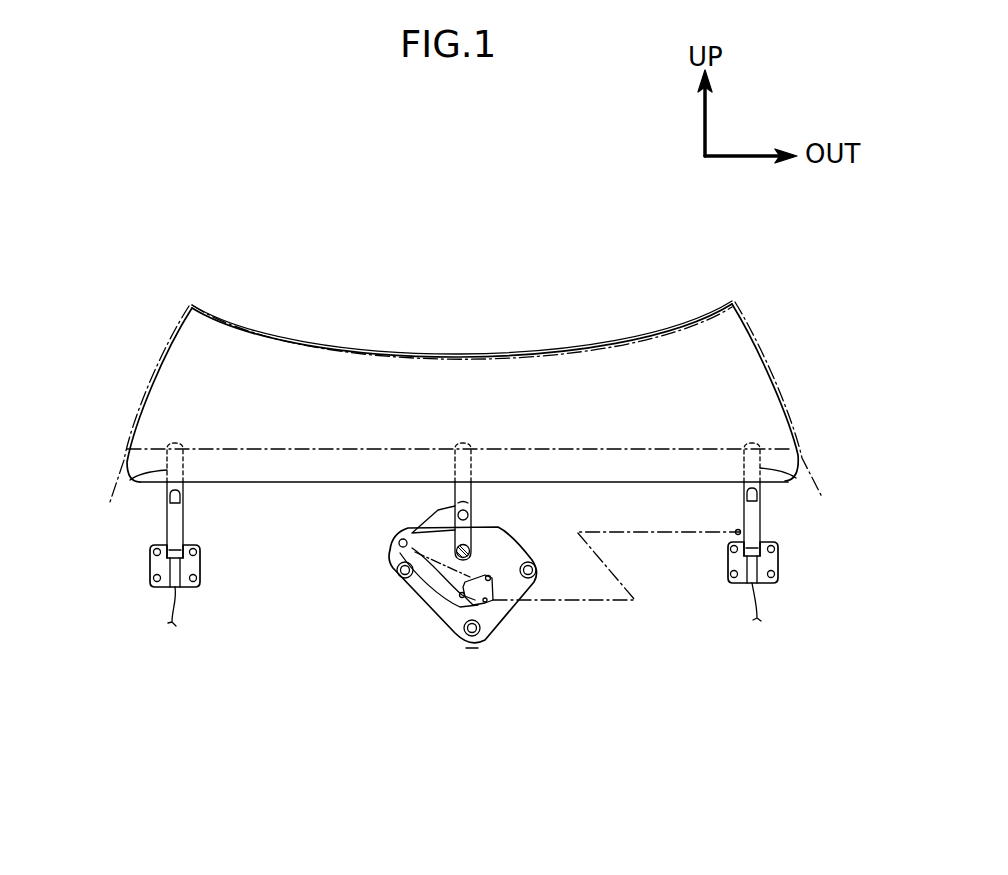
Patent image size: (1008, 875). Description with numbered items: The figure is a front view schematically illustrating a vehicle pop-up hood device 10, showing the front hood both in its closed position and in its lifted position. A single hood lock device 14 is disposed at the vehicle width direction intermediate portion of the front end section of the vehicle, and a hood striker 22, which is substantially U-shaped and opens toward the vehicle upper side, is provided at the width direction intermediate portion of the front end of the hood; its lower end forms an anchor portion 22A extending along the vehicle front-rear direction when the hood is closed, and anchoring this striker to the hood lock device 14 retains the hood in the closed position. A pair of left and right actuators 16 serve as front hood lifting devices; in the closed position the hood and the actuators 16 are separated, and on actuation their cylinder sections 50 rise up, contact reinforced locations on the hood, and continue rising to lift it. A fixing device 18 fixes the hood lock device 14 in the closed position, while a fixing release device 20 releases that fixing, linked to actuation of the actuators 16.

The vehicle pop-up hood device 10 is at (250, 665).
The hood lock device 14 is at (492, 635).
The actuators 16 is at (150, 565).
The fixing device 18 is at (492, 613).
The fixing release device 20 is at (670, 532).
The hood striker 22 is at (455, 492).
The anchor portion 22A is at (405, 533).
The cylinder sections 50 is at (167, 512).